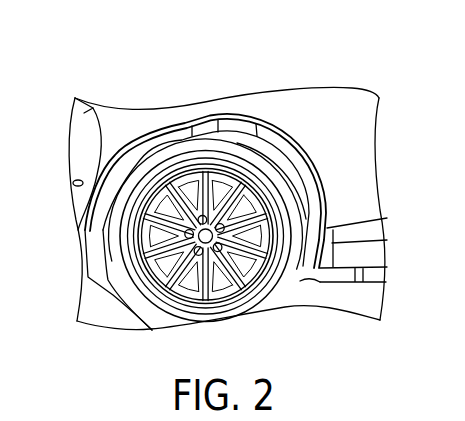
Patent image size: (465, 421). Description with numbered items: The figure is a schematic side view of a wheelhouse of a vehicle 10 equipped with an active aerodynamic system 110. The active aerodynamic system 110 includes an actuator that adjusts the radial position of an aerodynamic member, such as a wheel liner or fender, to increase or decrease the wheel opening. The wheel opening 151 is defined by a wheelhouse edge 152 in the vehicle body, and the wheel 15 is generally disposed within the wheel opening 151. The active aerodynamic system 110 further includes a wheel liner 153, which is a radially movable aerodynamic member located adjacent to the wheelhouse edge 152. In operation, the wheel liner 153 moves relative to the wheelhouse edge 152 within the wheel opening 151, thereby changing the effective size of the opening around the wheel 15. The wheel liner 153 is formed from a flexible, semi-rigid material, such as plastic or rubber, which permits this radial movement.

The vehicle 10 is at (90, 88).
The active aerodynamic system 110 is at (143, 107).
The wheel opening 151 is at (130, 152).
The wheelhouse edge 152 is at (300, 140).
The wheel liner 153 is at (328, 188).
The wheel 15 is at (133, 294).